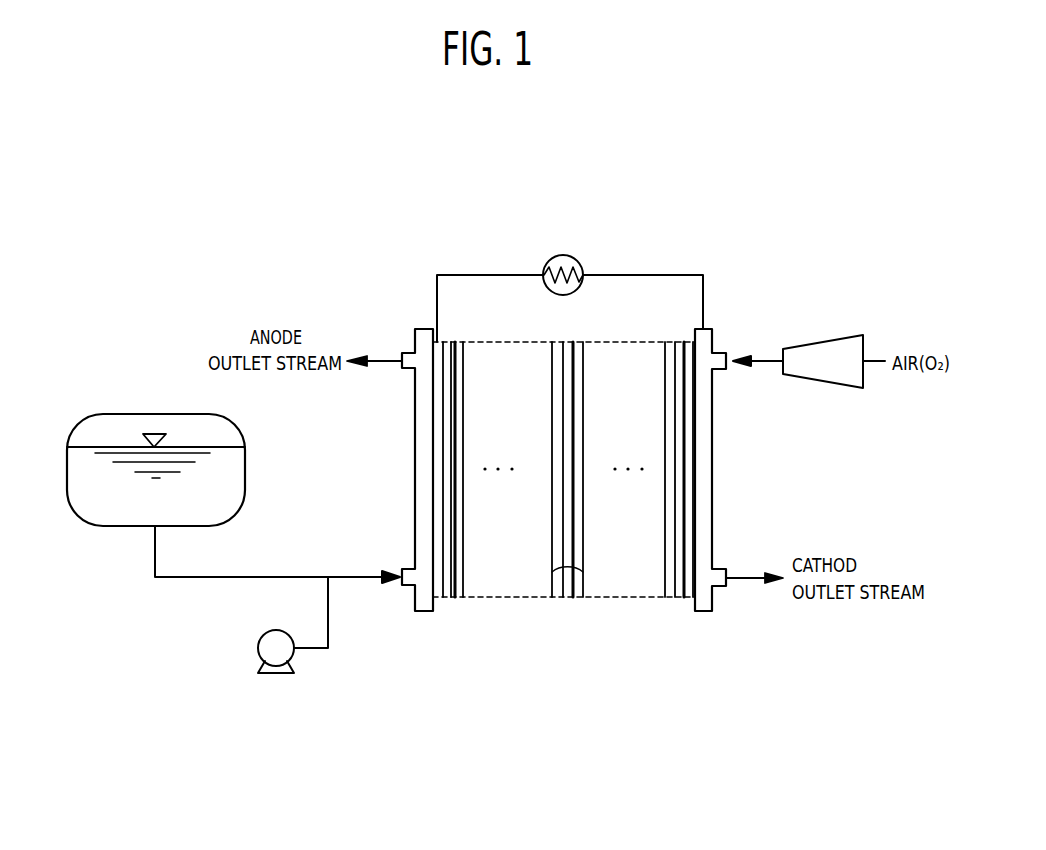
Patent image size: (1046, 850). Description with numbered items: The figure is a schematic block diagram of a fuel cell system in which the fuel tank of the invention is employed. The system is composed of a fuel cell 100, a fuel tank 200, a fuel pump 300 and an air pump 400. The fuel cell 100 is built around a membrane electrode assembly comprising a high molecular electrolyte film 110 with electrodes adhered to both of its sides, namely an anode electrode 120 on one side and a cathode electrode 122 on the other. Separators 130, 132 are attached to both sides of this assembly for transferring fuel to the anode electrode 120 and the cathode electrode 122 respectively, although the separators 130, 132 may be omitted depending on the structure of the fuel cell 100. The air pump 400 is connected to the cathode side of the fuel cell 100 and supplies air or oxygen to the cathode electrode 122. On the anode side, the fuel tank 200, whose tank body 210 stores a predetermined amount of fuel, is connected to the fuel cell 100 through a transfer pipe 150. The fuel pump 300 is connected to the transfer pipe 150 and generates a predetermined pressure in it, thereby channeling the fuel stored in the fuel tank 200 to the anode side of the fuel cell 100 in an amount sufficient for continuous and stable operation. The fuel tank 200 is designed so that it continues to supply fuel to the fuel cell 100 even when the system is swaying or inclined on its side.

The fuel cell 100 is at (712, 472).
The high molecular electrolyte film 110 is at (571, 582).
The anode electrode 120 is at (558, 583).
The cathode electrode 122 is at (580, 585).
The separator 130 is at (556, 572).
The separator 132 is at (580, 572).
The transfer pipe 150 is at (217, 578).
The fuel tank 200 is at (97, 408).
The tank body 210 is at (153, 414).
The fuel pump 300 is at (275, 675).
The air pump 400 is at (823, 340).